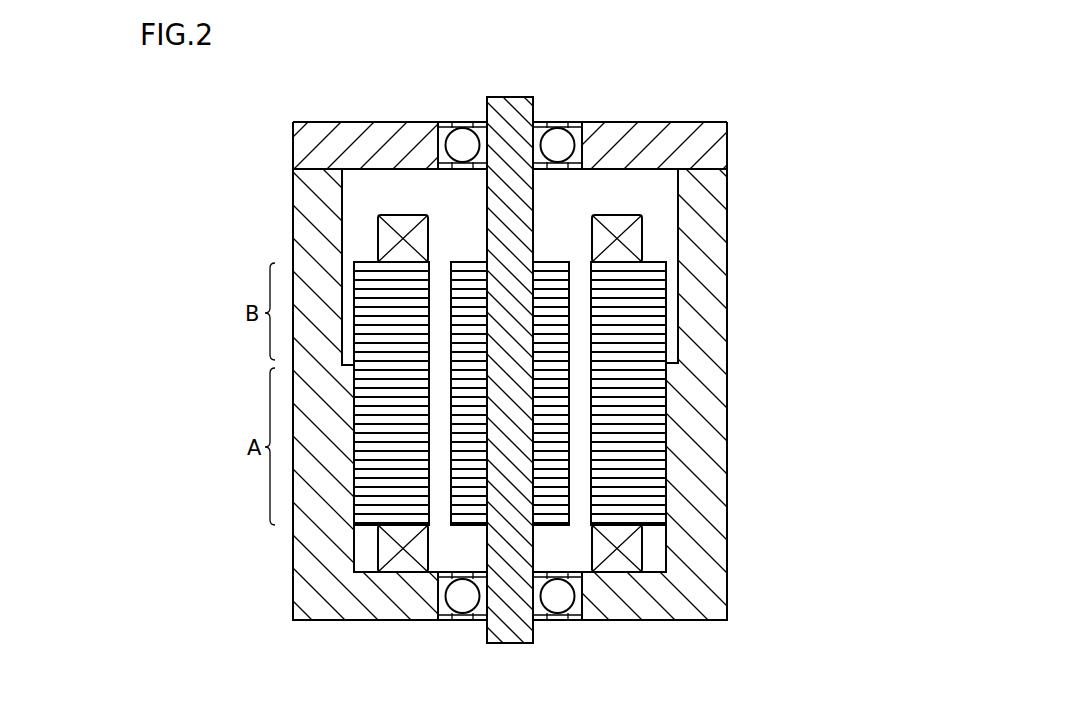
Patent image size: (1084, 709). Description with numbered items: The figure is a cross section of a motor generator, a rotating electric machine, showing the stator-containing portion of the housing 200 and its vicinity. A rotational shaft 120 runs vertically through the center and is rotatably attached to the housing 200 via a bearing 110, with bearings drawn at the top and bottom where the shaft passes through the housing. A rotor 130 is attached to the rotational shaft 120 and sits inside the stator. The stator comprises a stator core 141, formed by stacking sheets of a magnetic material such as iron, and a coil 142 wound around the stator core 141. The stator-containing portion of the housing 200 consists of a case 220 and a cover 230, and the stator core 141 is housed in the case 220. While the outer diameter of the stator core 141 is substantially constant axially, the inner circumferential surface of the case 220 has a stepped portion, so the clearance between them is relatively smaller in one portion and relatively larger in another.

The bearing 110 is at (558, 137).
The rotational shaft 120 is at (509, 113).
The rotor 130 is at (553, 273).
The stator core 141 is at (652, 343).
The coil 142 is at (633, 238).
The housing 200 is at (452, 371).
The case 220 is at (313, 204).
The cover 230 is at (313, 144).